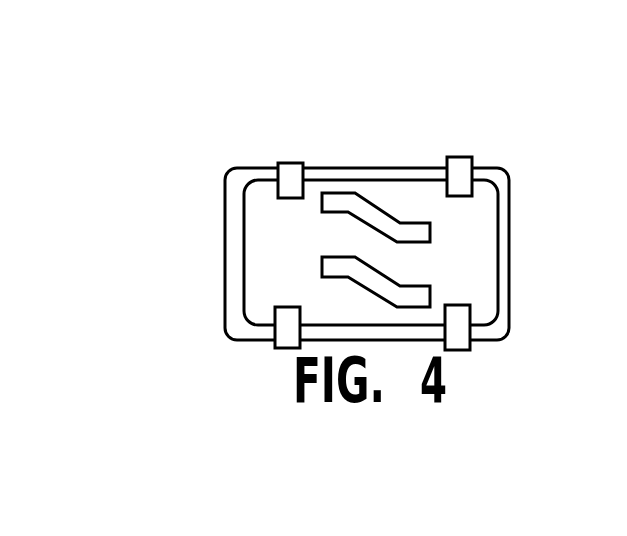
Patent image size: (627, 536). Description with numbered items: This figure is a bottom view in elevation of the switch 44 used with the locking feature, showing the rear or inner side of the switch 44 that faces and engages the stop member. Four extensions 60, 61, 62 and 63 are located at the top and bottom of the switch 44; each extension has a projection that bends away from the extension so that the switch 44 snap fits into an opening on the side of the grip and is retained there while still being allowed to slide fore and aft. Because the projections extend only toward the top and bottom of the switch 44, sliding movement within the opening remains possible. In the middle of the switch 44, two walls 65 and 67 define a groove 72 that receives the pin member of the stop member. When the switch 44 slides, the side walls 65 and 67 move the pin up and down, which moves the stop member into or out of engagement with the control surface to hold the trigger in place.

The switch 44 is at (455, 112).
The extension 60 is at (272, 350).
The extension 61 is at (496, 348).
The extension 62 is at (273, 166).
The extension 63 is at (460, 160).
The wall 65 is at (327, 263).
The wall 67 is at (340, 162).
The groove 72 is at (388, 259).